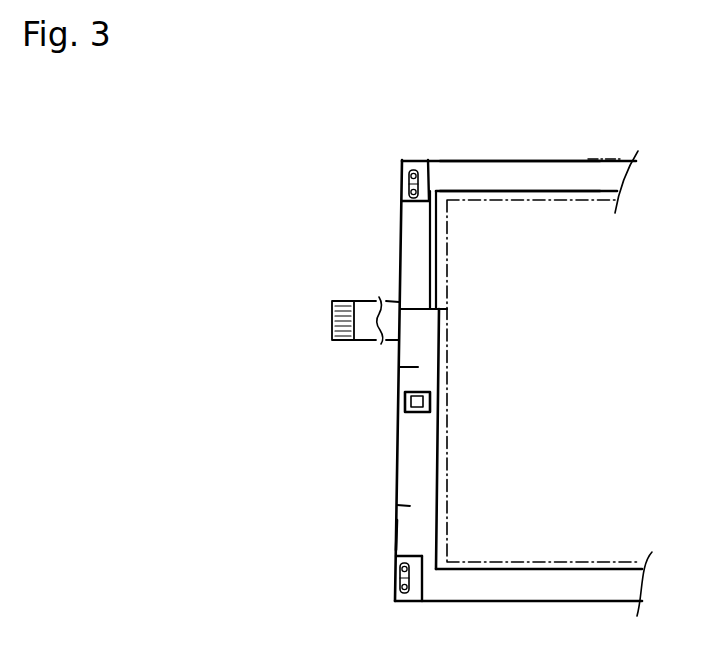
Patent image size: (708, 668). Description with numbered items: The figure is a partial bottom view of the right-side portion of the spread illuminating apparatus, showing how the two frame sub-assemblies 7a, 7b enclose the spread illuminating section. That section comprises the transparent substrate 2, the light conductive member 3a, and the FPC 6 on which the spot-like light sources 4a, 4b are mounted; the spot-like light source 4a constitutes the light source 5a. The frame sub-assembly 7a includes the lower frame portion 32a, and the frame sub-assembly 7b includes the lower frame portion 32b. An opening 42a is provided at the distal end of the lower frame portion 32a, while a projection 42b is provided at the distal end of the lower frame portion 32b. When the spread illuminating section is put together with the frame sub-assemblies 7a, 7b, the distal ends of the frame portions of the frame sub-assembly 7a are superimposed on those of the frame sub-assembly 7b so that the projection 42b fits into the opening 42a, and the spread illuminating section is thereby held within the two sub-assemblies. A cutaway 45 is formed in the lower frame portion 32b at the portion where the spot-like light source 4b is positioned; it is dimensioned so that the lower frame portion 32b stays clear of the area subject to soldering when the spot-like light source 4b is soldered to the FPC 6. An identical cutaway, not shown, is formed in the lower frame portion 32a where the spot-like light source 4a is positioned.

The transparent substrate 2 is at (428, 237).
The light conductive member 3a is at (480, 177).
The spot-like light source 4a is at (406, 180).
The spot-like light source 4b is at (398, 585).
The light source 5a is at (331, 90).
The FPC (flexible printed circuit board) 6 is at (420, 265).
The frame sub-assembly 7a is at (393, 361).
The frame sub-assembly 7b is at (390, 535).
The lower frame portion 32a is at (400, 367).
The lower frame portion 32b is at (410, 506).
The opening 42a is at (405, 402).
The projection 42b is at (418, 412).
The cutaway 45 is at (398, 557).